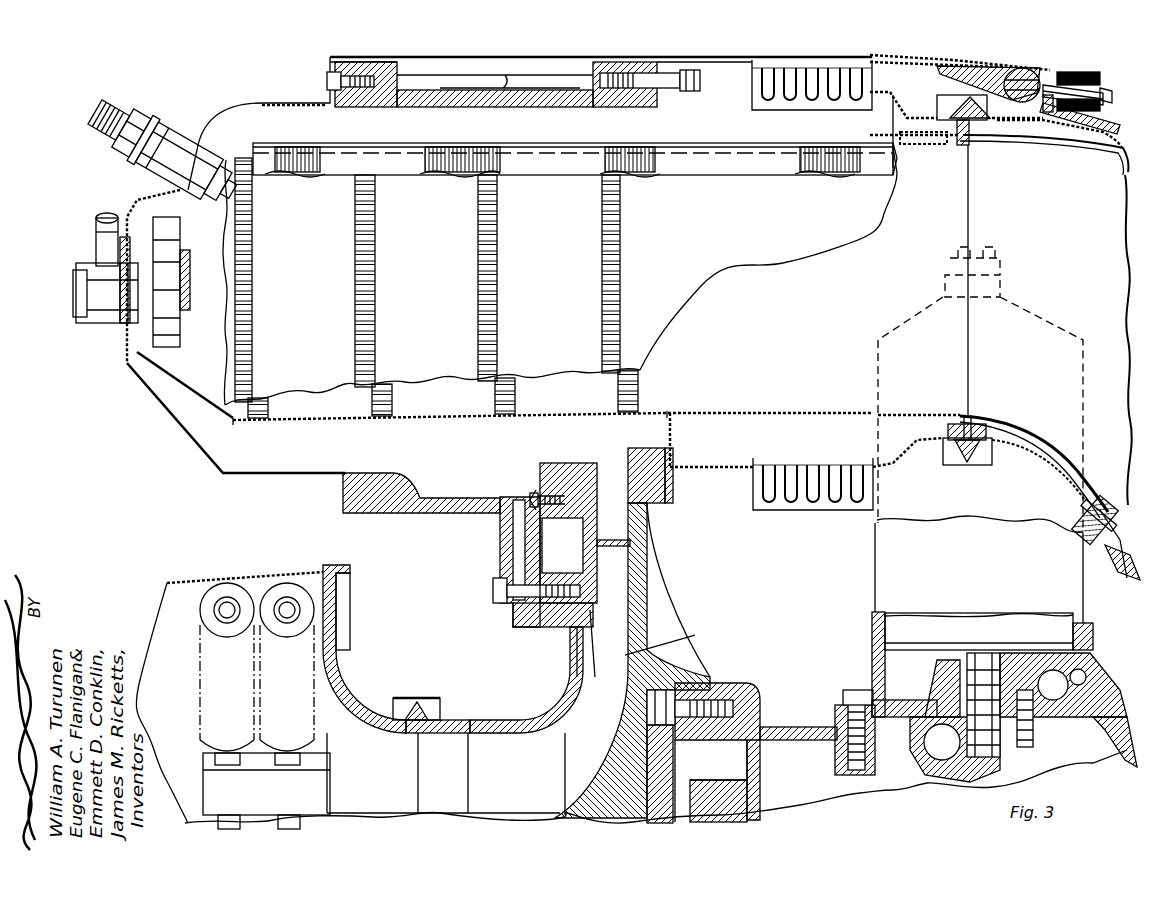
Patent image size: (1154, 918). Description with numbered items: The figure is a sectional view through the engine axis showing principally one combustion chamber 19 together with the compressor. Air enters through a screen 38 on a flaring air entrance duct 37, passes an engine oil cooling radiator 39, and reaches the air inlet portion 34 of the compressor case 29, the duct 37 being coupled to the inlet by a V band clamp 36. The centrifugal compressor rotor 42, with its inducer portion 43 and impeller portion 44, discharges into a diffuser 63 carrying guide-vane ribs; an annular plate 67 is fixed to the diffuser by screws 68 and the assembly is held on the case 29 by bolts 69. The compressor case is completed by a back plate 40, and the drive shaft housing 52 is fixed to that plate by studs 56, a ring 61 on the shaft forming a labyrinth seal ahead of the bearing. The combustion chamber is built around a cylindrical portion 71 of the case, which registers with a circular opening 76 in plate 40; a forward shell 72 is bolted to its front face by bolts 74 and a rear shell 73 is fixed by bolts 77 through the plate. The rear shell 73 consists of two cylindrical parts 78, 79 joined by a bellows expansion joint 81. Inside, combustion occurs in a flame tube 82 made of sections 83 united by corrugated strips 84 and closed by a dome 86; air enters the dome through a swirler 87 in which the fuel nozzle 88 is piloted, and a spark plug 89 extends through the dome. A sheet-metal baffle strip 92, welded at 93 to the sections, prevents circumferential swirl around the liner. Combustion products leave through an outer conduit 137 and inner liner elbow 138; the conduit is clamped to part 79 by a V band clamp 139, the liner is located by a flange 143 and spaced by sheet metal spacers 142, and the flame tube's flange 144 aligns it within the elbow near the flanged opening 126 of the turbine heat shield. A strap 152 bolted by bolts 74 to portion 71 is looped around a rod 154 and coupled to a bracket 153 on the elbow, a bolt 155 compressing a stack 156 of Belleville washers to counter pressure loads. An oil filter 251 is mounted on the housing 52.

The combustion chamber 19 is at (262, 100).
The bolts 74 is at (327, 80).
The igniter or spark plug 89 is at (186, 130).
The cylindrical portion 71 is at (470, 92).
The strap 152 is at (505, 88).
The circular openings 76 is at (646, 100).
The bolts 77 is at (672, 92).
The back plate 40 is at (688, 95).
The rod 154 is at (1030, 70).
The stack of Belleville washers 156 is at (1080, 72).
The bolt 155 is at (1108, 90).
The bracket 153 is at (1100, 120).
The flange 144 is at (920, 146).
The outer conduit or elbow 137 is at (1015, 143).
The welds 93 is at (302, 176).
The strip 92 is at (768, 172).
The flame tube or combustion liner 82 is at (795, 248).
The swirler 87 is at (172, 305).
The fuel nozzle 88 is at (105, 326).
The forward cap or dome 86 is at (198, 396).
The forward shell 72 is at (185, 445).
The corrugated strips 84 is at (250, 422).
The sections 83 is at (305, 416).
The diffuser 63 is at (582, 462).
The annular plate 67 is at (536, 492).
The screws 68 is at (530, 496).
The compressor case 29 is at (510, 540).
The bolts 69 is at (492, 592).
The ring 61 is at (615, 545).
The cylindrical part 78 is at (725, 466).
The rear shell 73 is at (706, 490).
The bellows type expansion joint 81 is at (800, 508).
The cylindrical part 79 is at (905, 455).
The V band clamp 139 is at (962, 466).
The flange 143 is at (970, 422).
The liner or inner elbow 138 is at (1040, 420).
The sheet metal spacers 142 is at (1095, 495).
The flanged openings 126 is at (1128, 585).
The oil filter 251 is at (874, 580).
The screen 38 is at (265, 578).
The flaring air entrance duct 37 is at (338, 640).
The engine oil cooling radiator 39 is at (226, 624).
The V band clamp 36 is at (430, 697).
The air inlet portion 34 is at (512, 718).
The centrifugal compressor rotor 42 is at (595, 670).
The inducer or entry portion 43 is at (490, 791).
The impeller or discharge portion 44 is at (670, 640).
The studs 56 is at (720, 700).
The engine frame or drive shaft housing 52 is at (803, 727).